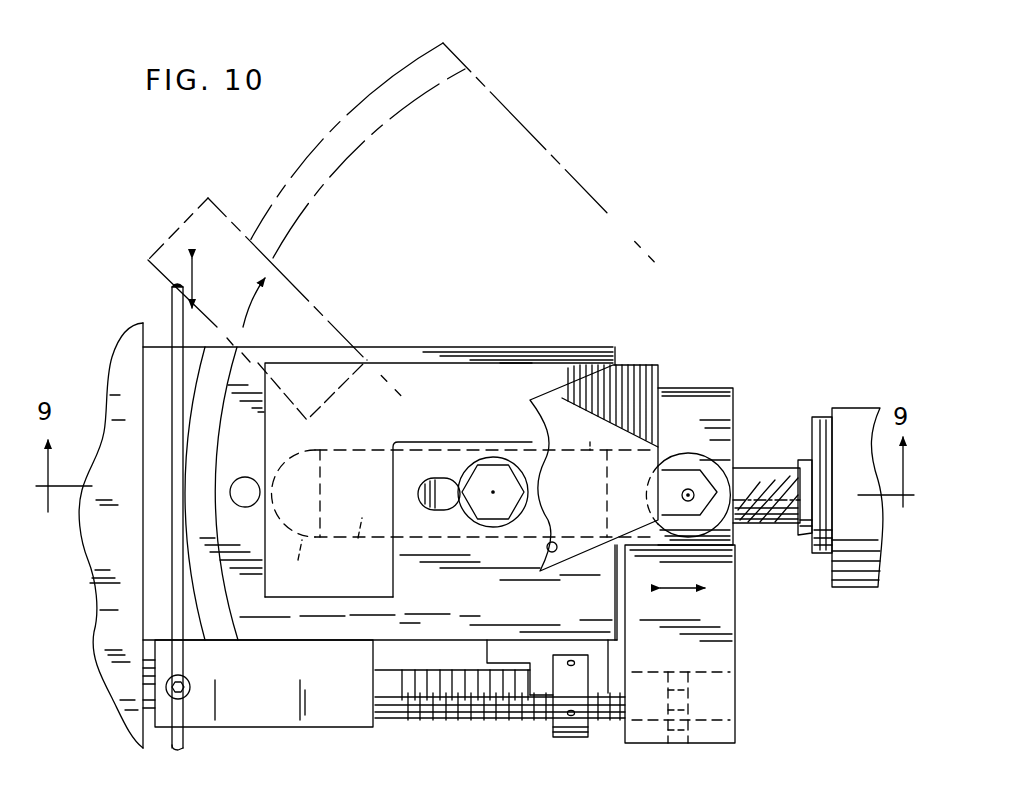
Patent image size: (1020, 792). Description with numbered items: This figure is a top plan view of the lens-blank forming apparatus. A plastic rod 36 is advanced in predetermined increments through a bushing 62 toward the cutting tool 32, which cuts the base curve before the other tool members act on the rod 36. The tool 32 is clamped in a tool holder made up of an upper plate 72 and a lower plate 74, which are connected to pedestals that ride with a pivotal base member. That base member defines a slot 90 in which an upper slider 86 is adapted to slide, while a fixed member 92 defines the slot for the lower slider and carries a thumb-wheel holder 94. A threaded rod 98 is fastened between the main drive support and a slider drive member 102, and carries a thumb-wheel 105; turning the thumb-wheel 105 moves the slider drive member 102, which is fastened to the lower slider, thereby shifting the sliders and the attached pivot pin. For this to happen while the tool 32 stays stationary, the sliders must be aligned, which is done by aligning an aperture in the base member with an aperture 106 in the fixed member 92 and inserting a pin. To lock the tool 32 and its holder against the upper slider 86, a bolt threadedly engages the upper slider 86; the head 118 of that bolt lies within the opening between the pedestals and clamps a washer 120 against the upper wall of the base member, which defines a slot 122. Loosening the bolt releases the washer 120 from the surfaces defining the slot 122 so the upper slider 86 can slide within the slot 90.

The tool 32 is at (678, 483).
The rod 36 is at (767, 502).
The bushing 62 is at (805, 467).
The upper plate 72 is at (590, 442).
The lower plate 74 is at (598, 392).
The upper slider 86 is at (358, 497).
The slot 90 is at (304, 508).
The member 92 is at (445, 617).
The thumb-wheel holder 94 is at (518, 648).
The threaded rod 98 is at (404, 695).
The slider drive member 102 is at (715, 610).
The thumb-wheel 105 is at (571, 715).
The aperture 106 is at (246, 490).
The head 118 is at (492, 480).
The washer 120 is at (470, 468).
The slot 122 is at (439, 490).